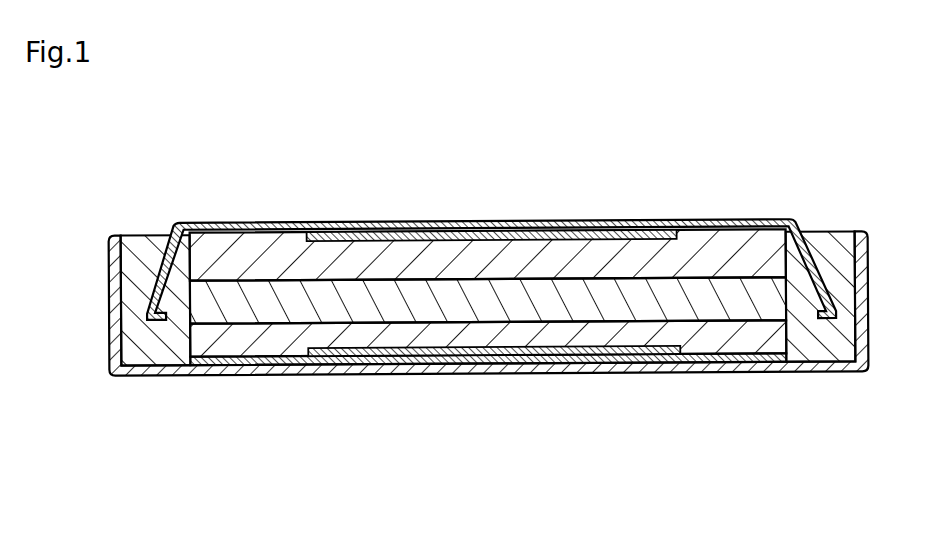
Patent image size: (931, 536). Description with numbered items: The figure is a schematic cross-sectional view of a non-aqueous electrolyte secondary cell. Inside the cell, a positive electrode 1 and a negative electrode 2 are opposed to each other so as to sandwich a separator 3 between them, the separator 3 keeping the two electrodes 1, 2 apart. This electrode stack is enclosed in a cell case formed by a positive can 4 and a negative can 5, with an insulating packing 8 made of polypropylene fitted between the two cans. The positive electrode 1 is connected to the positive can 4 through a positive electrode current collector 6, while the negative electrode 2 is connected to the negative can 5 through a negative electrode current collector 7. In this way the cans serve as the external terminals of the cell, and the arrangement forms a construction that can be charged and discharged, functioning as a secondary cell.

The positive electrode 1 is at (257, 250).
The negative electrode 2 is at (738, 352).
The separator 3 is at (280, 312).
The positive can 4 is at (435, 214).
The negative can 5 is at (165, 388).
The positive electrode current collector 6 is at (580, 233).
The negative electrode current collector 7 is at (414, 366).
The insulating packing 8 is at (150, 232).